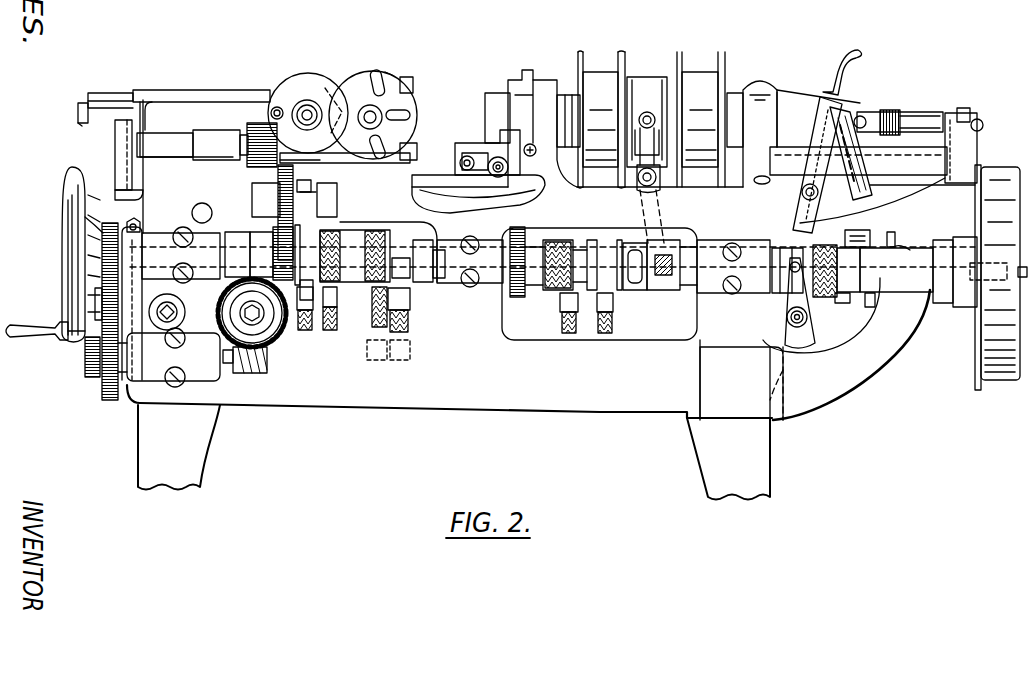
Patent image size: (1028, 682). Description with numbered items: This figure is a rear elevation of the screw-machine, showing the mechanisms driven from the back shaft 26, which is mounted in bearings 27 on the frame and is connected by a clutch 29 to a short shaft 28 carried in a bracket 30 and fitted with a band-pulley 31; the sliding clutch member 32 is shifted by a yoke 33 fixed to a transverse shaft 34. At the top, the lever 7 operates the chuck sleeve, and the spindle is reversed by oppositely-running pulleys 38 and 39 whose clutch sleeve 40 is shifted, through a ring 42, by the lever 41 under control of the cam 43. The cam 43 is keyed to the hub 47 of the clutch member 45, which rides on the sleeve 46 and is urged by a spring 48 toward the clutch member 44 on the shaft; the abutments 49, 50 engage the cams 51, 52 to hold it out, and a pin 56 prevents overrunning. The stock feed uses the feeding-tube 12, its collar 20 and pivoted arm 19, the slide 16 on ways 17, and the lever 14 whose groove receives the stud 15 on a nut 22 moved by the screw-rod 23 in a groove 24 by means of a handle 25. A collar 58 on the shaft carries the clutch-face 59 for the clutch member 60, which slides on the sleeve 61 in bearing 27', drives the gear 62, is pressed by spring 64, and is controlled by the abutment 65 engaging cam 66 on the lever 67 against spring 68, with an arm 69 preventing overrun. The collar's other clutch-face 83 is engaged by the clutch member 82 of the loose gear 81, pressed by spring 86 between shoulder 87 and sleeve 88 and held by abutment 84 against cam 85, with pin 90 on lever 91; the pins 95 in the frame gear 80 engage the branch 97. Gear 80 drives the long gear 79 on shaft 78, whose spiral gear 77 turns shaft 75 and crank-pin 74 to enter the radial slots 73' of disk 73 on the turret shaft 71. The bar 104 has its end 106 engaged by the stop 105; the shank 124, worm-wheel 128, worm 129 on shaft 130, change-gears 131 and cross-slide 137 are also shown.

The lever 7 is at (893, 217).
The feeding-tube 12 is at (900, 114).
The lever 14 is at (812, 158).
The stud 15 is at (862, 116).
The slide 16 is at (978, 148).
The ways 17 is at (782, 156).
The pivoted arm 19 is at (963, 108).
The collar 20 is at (980, 118).
The nut 22 is at (893, 112).
The screw-rod 23 is at (866, 166).
The groove 24 is at (868, 192).
The handle 25 is at (856, 52).
The shaft 26 is at (718, 294).
The bearings 27 is at (438, 243).
The bearing 27' is at (470, 247).
The short shaft 28 is at (913, 263).
The clutch 29 is at (846, 306).
The bracket 30 is at (808, 387).
The band-pulley 31 is at (975, 352).
The clutch member 32 is at (824, 300).
The yoke 33 is at (786, 305).
The shaft 34 is at (799, 304).
The pulley 38 is at (597, 75).
The pulley 39 is at (704, 75).
The sleeve 40 is at (640, 80).
The lever 41 is at (655, 185).
The ring 42 is at (650, 108).
The cam 43 is at (648, 292).
The clutch member 44 is at (547, 292).
The clutch member 45 is at (560, 240).
The sleeve 46 is at (606, 260).
The hub 47 is at (663, 292).
The spring 48 is at (674, 293).
The abutment 49 is at (611, 258).
The abutment 50 is at (586, 260).
The cam 51 is at (622, 292).
The cam 52 is at (605, 240).
The pin 56 is at (602, 335).
The collar 58 is at (345, 245).
The clutch-face 59 is at (360, 245).
The clutch member 60 is at (380, 245).
The sleeve 61 is at (420, 242).
The gear 62 is at (527, 232).
The spring 64 is at (436, 272).
The abutment 65 is at (400, 261).
The cam 66 is at (410, 295).
The lever 67 is at (413, 320).
The spring 68 is at (408, 333).
The spring-pressed arm 69 is at (378, 292).
The shaft 71 is at (377, 115).
The disk 73 is at (373, 103).
The radial slots 73' is at (397, 63).
The crank-pin 74 is at (277, 106).
The shaft 75 is at (306, 108).
The spiral gear 77 is at (312, 165).
The shaft 78 is at (192, 144).
The gear 79 is at (262, 168).
The gear 80 is at (282, 170).
The gear 81 is at (275, 250).
The clutch member 82 is at (336, 290).
The clutch-face 83 is at (327, 245).
The abutment 84 is at (312, 278).
The cam 85 is at (301, 308).
The spring 86 is at (237, 246).
The shoulder 87 is at (212, 210).
The sleeve 88 is at (258, 200).
The pin 90 is at (375, 300).
The spring-pressed lever 91 is at (375, 315).
The pins 95 is at (335, 199).
The branch 97 is at (330, 205).
The bar 104 is at (90, 102).
The stop 105 is at (118, 130).
The end 106 is at (80, 120).
The shank 124 is at (180, 305).
The worm-wheel 128 is at (268, 338).
The worm 129 is at (268, 366).
The shaft 130 is at (230, 364).
The change-gears 131 is at (110, 232).
The cross-slide 137 is at (466, 150).